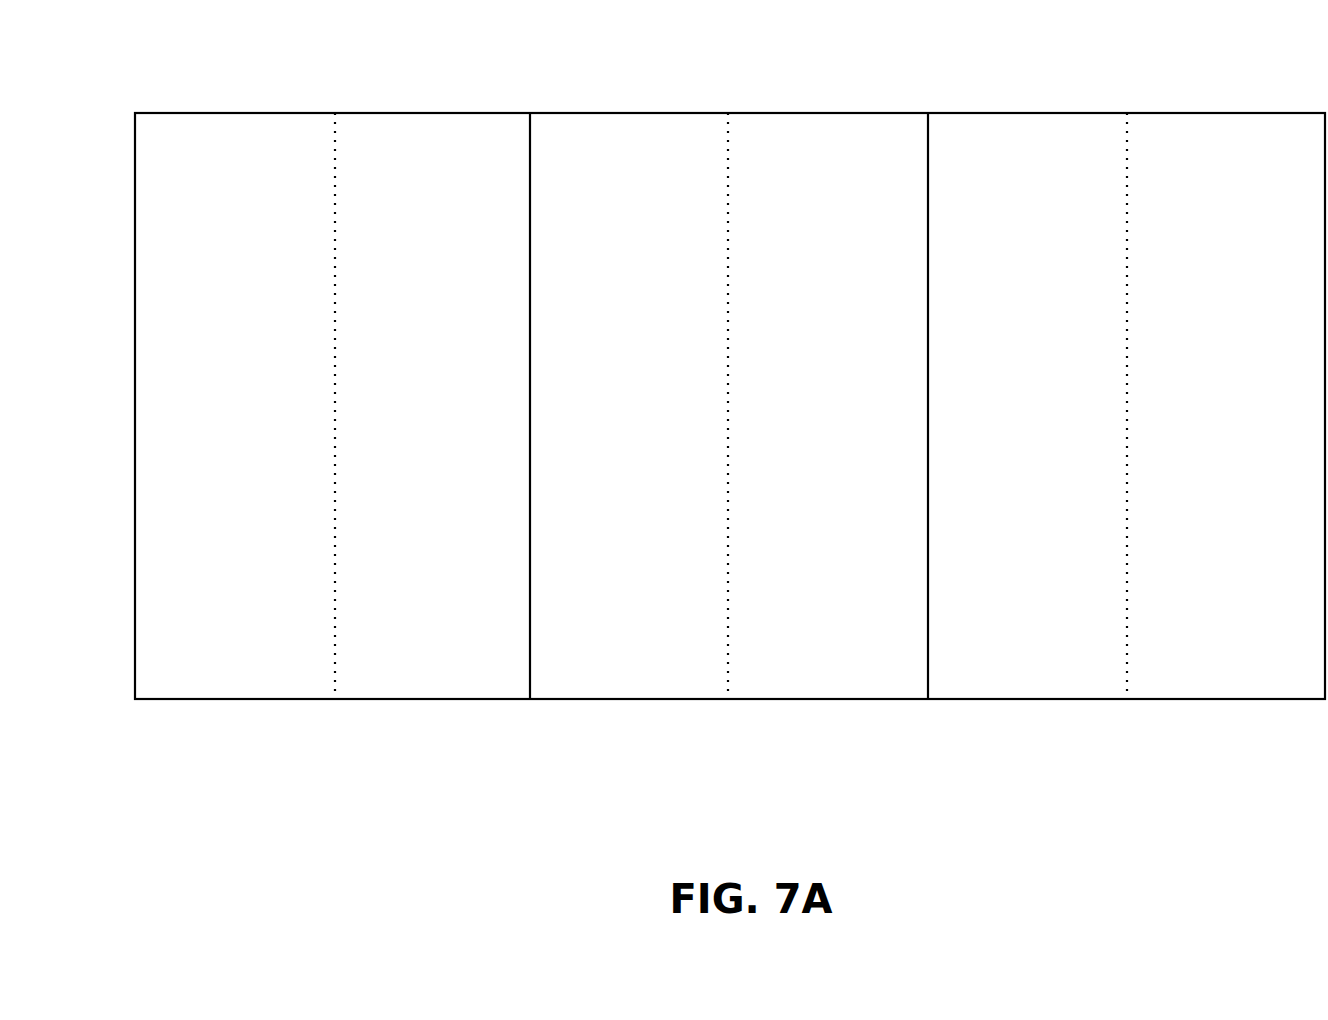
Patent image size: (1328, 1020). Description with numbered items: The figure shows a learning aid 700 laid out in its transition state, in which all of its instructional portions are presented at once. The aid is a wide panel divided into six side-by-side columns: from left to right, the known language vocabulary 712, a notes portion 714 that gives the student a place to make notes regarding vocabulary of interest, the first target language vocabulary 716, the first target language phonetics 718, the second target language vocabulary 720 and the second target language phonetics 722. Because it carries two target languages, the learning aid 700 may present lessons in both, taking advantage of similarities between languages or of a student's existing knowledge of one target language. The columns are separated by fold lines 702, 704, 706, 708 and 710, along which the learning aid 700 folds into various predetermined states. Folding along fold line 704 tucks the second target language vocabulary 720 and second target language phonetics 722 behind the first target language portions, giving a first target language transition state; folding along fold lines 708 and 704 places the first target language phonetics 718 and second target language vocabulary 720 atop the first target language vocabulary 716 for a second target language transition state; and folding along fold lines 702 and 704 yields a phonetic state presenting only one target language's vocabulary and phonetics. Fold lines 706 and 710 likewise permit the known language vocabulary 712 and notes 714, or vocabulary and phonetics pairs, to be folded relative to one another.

The learning aid 700 is at (528, 762).
The fold line 702 is at (530, 113).
The fold line 704 is at (928, 113).
The fold line 706 is at (335, 113).
The fold line 708 is at (728, 113).
The fold line 710 is at (1127, 113).
The known language vocabulary 712 is at (213, 476).
The notes portion 714 is at (393, 476).
The first target language vocabulary 716 is at (617, 475).
The first target language phonetics 718 is at (797, 475).
The second target language vocabulary 720 is at (1005, 475).
The second target language phonetics 722 is at (1204, 475).